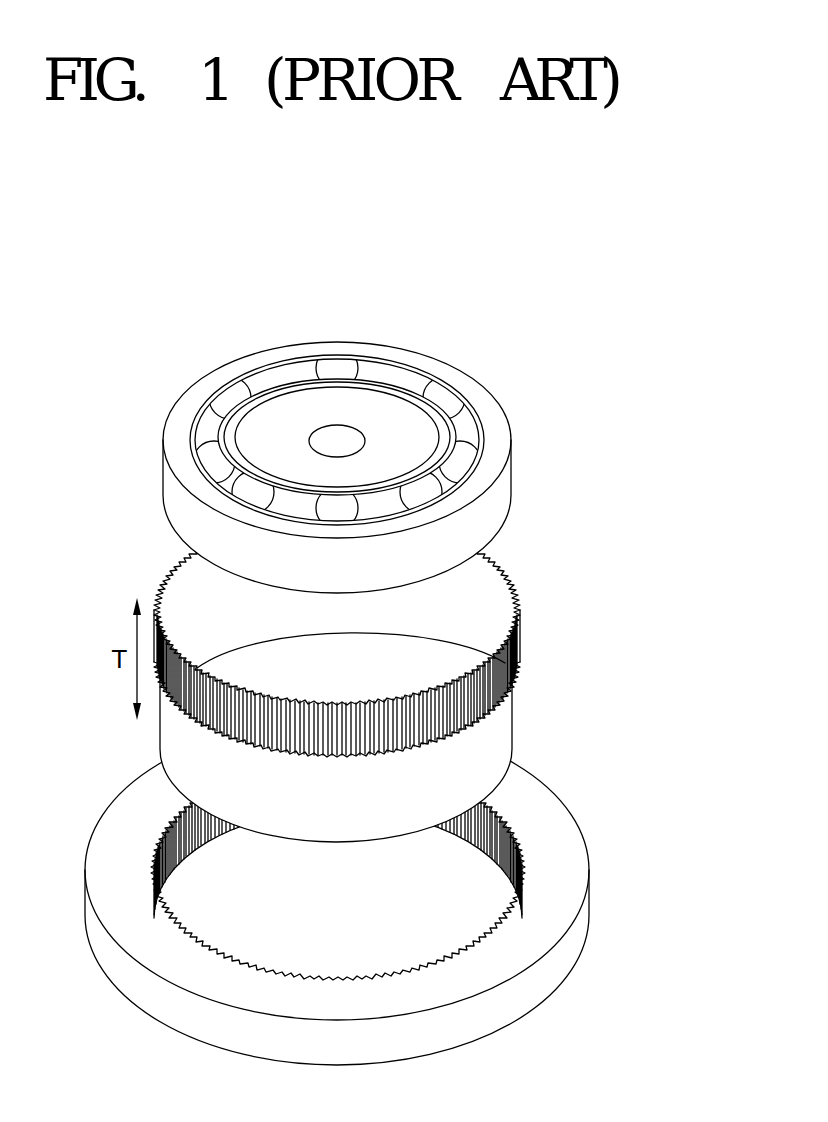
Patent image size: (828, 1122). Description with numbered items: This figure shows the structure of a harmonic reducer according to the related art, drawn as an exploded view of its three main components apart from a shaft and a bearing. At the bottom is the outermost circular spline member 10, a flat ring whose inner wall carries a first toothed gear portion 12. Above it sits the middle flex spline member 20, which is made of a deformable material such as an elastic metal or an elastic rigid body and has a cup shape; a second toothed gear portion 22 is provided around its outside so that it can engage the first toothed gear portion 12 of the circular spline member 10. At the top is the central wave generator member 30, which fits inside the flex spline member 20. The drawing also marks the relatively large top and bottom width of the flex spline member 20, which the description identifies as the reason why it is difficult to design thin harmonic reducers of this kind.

The circular spline member 10 is at (608, 901).
The first toothed gear portion 12 is at (448, 958).
The flex spline member 20 is at (540, 709).
The second toothed gear portion 22 is at (482, 670).
The wave generator member 30 is at (533, 472).